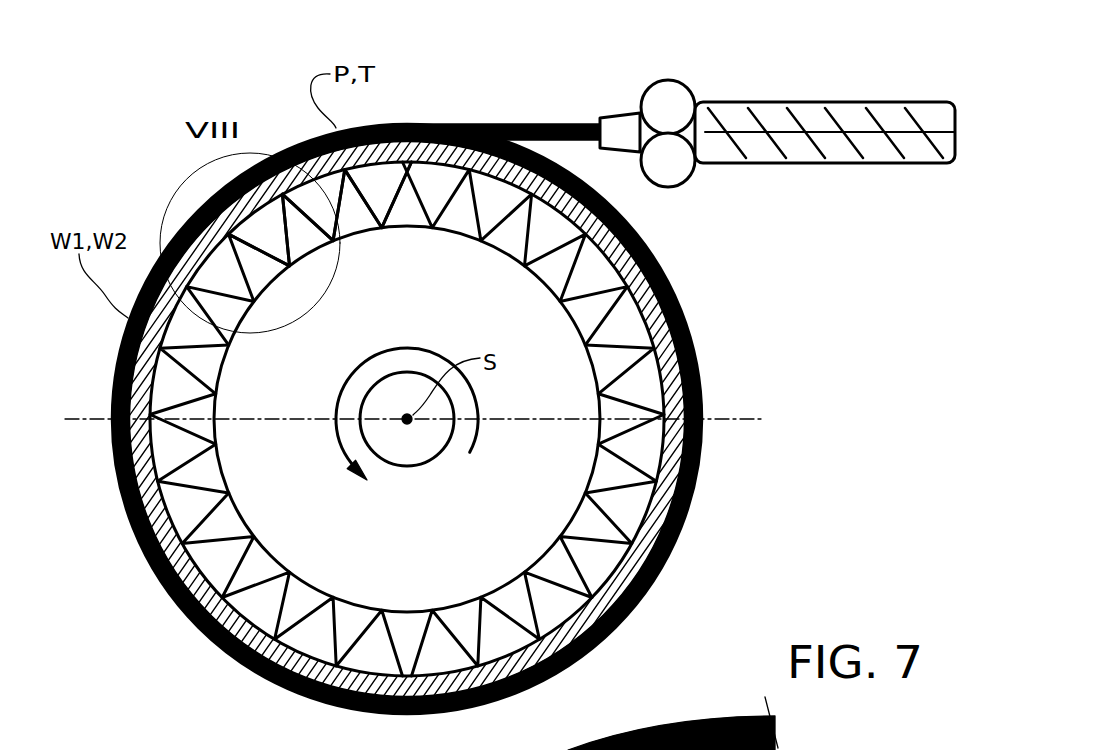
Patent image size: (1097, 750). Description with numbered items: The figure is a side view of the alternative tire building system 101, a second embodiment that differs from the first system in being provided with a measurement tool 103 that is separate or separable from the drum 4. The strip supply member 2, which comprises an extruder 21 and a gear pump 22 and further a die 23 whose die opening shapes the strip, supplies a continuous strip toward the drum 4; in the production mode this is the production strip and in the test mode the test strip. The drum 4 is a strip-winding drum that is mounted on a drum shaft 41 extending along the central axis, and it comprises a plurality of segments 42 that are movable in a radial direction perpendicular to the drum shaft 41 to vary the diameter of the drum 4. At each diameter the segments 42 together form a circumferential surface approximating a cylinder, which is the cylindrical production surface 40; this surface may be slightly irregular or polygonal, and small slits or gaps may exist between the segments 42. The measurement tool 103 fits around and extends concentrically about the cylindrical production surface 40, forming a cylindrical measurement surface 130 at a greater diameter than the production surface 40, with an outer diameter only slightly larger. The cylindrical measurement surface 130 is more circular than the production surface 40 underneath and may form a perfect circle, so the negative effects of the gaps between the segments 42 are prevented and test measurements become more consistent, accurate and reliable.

The alternative tire building system 101 is at (112, 93).
The strip supply member 2 is at (776, 101).
The extruder 21 is at (858, 108).
The gear pump 22 is at (668, 88).
The die 23 is at (618, 124).
The drum 4 is at (179, 598).
The cylindrical production surface 40 is at (553, 227).
The drum shaft 41 is at (421, 468).
The segments 42 is at (332, 170).
The cylindrical measurement surface 130 is at (640, 313).
The measurement tool 103 is at (677, 397).